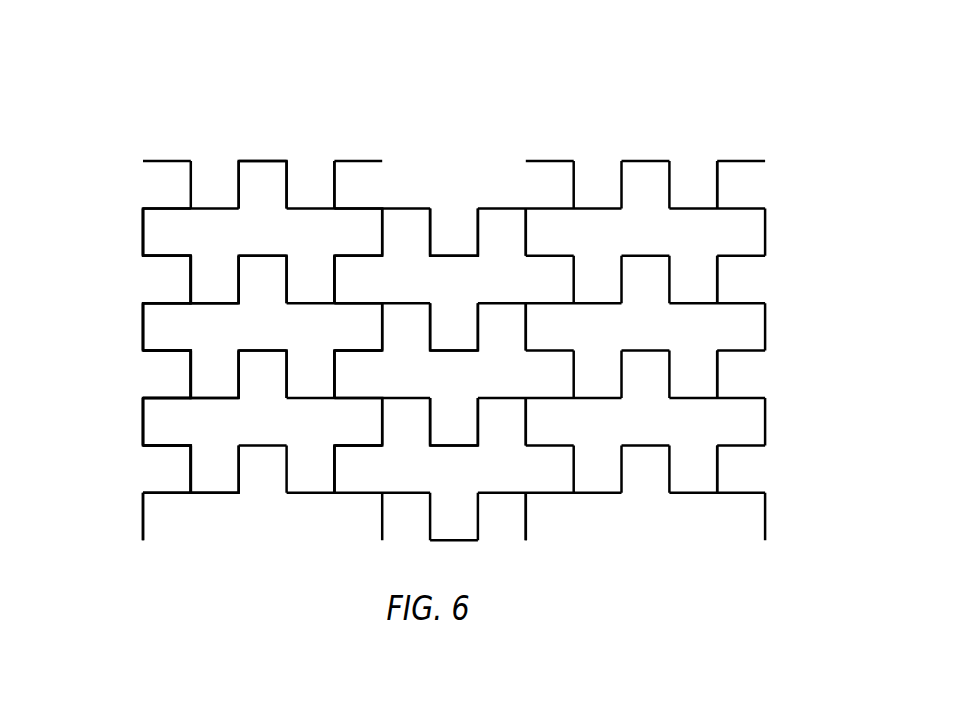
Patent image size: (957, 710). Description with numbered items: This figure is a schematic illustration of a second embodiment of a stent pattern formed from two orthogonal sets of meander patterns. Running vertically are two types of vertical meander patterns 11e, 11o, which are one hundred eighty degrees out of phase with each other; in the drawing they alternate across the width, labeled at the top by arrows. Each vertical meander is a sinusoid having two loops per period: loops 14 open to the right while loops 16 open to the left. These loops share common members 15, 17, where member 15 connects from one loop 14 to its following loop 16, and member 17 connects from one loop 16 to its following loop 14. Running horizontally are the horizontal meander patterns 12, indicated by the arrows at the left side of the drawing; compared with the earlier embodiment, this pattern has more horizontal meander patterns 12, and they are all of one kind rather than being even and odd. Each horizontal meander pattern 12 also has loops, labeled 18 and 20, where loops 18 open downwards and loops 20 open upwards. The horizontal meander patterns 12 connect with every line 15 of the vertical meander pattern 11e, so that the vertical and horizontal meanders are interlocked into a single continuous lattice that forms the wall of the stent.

The vertical meander pattern 11e is at (169, 118).
The vertical meander pattern 11o is at (358, 118).
The horizontal meander pattern 12 is at (137, 205).
The loop 14 is at (156, 242).
The common member 15 is at (184, 301).
The loop 16 is at (156, 288).
The common member 17 is at (184, 256).
The loop 18 is at (252, 194).
The loop 20 is at (443, 242).